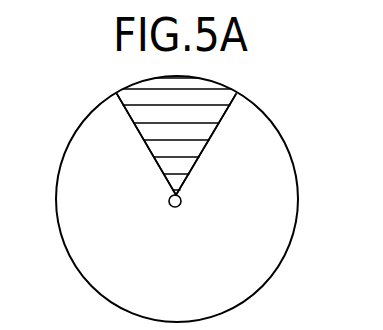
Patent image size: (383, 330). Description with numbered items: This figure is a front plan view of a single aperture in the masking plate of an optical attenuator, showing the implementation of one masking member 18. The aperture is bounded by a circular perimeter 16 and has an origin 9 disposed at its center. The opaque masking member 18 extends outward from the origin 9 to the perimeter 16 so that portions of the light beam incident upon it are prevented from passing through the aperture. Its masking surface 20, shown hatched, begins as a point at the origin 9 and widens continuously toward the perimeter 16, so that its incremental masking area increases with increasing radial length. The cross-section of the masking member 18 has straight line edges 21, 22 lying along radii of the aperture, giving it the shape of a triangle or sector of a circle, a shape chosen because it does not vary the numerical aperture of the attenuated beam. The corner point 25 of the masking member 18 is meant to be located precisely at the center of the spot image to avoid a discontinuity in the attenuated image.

The perimeter 16 is at (117, 94).
The masking member 18 is at (221, 97).
The masking surface 20 is at (187, 91).
The straight line edge 21 is at (141, 135).
The straight line edge 22 is at (206, 145).
The corner point 25 is at (151, 193).
The origin 9 is at (172, 208).